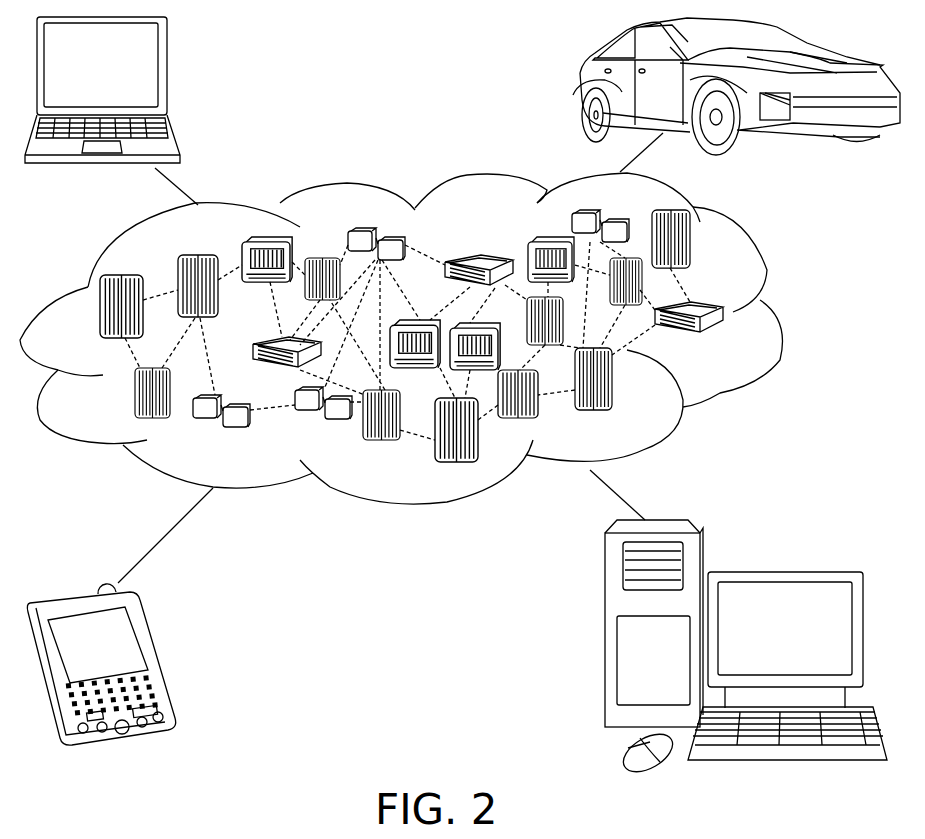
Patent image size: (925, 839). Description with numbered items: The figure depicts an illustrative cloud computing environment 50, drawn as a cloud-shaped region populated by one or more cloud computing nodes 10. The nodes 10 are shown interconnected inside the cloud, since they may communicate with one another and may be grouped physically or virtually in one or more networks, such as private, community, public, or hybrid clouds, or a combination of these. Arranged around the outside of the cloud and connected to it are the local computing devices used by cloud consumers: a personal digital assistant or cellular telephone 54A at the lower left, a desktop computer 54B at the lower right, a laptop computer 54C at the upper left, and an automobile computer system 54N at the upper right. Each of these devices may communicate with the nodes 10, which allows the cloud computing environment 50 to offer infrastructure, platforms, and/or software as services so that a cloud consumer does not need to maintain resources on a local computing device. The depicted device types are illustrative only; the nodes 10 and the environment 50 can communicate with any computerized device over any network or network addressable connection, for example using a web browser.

The cloud computing nodes 10 is at (733, 343).
The cloud computing environment 50 is at (782, 315).
The personal digital assistant or cellular telephone 54A is at (157, 657).
The desktop computer 54B is at (782, 572).
The laptop computer 54C is at (167, 72).
The automobile computer system 54N is at (572, 85).